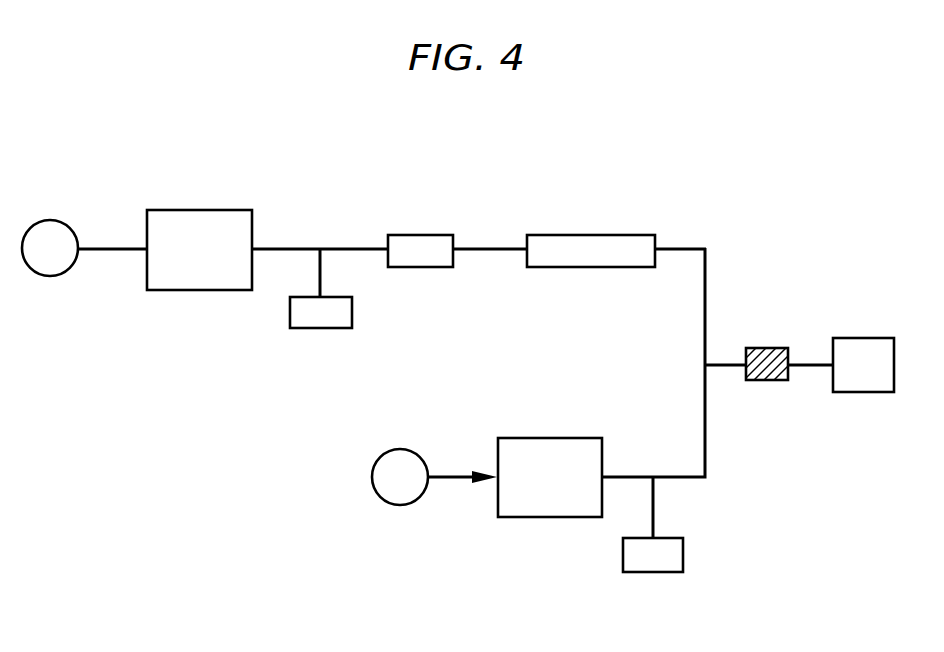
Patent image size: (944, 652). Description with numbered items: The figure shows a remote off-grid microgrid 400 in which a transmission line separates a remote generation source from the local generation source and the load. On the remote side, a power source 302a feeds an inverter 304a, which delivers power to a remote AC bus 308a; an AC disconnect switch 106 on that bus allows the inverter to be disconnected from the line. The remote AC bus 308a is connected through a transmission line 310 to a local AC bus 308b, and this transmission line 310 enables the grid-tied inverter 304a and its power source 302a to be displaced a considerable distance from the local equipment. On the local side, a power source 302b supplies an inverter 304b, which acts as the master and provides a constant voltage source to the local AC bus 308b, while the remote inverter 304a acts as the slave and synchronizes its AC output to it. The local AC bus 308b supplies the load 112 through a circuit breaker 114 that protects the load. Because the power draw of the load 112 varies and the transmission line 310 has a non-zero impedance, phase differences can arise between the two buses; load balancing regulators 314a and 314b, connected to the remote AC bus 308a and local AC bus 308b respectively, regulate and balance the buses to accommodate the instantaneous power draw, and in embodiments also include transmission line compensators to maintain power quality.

The remote off-grid microgrid 400 is at (671, 152).
The power source 302a is at (52, 220).
The power source 302b is at (402, 448).
The inverter 304a is at (177, 292).
The inverter 304b is at (603, 453).
The remote AC bus 308a is at (287, 245).
The local AC bus 308b is at (705, 422).
The load balancing regulator 314a is at (307, 329).
The load balancing regulator 314b is at (648, 573).
The AC disconnect switch 106 is at (418, 232).
The transmission line 310 is at (565, 269).
The circuit breaker 114 is at (770, 347).
The load 112 is at (863, 337).